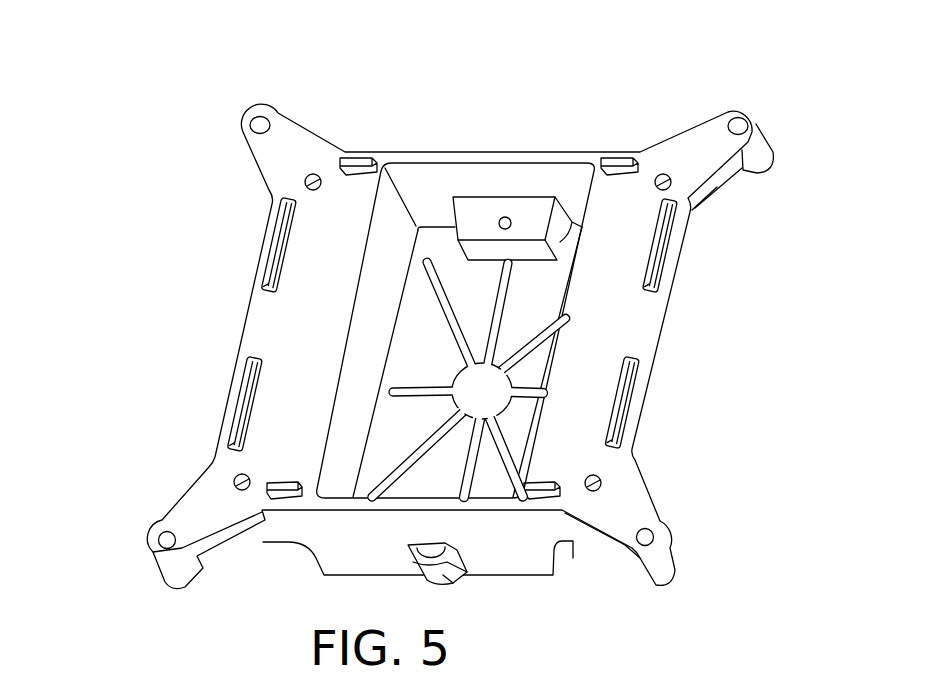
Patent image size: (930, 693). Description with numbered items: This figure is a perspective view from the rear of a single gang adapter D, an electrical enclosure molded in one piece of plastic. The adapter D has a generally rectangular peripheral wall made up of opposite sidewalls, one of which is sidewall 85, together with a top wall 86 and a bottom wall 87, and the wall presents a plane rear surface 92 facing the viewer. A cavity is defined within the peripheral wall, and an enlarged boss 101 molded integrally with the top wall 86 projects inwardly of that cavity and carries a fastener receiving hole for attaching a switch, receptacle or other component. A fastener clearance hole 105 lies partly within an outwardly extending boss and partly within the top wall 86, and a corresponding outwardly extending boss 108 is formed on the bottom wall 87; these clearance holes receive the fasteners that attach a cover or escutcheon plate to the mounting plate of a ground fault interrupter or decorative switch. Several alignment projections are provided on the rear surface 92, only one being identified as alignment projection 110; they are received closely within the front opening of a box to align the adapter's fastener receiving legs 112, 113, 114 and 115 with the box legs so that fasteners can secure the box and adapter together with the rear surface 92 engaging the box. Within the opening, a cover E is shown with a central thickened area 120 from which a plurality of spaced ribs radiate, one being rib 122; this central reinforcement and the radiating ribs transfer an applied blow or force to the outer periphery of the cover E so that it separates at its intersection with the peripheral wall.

The single gang adapter D is at (668, 110).
The sidewall 85 is at (345, 380).
The top wall 86 is at (425, 180).
The bottom wall 87 is at (333, 545).
The rear surface 92 is at (452, 158).
The boss 101 is at (537, 208).
The fastener clearance hole 105 is at (505, 217).
The outwardly extending boss 108 is at (445, 578).
The alignment projection 110 is at (622, 382).
The fastener receiving leg 112 is at (765, 132).
The fastener receiving leg 113 is at (270, 110).
The fastener receiving leg 114 is at (155, 568).
The fastener receiving leg 115 is at (673, 552).
The central thickened area 120 is at (480, 393).
The rib 122 is at (388, 478).
The cover E is at (553, 308).